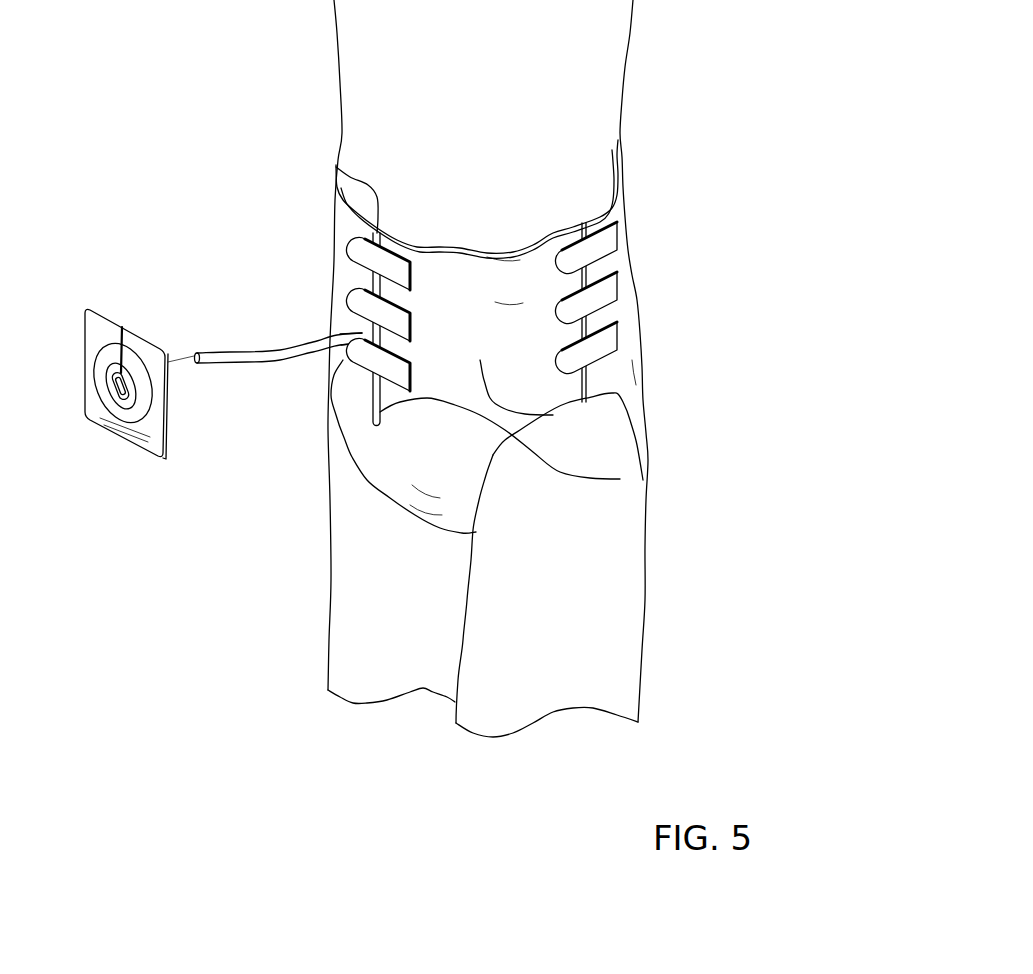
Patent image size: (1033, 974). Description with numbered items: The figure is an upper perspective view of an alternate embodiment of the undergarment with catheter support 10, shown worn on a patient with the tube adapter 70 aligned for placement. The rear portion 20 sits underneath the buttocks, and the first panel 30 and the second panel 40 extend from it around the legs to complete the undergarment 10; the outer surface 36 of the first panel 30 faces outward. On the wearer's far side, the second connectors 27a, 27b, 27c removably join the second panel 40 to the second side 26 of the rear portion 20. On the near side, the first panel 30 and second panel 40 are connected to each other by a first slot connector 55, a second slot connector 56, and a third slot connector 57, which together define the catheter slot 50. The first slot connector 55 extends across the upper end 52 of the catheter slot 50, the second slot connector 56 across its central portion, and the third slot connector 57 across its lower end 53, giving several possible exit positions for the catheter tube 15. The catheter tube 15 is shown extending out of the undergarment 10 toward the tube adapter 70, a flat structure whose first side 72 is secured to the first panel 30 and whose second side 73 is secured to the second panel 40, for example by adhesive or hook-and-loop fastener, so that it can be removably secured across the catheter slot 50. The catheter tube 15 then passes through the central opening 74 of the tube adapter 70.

The undergarment with catheter support 10 is at (377, 368).
The catheter tube 15 is at (250, 365).
The rear portion 20 is at (623, 180).
The second side of the rear portion 26 is at (590, 318).
The second connector 27a is at (597, 248).
The second connector 27b is at (600, 298).
The second connector 27c is at (597, 338).
The first panel 30 is at (340, 212).
The outer surface of the first panel 36 is at (345, 326).
The second panel 40 is at (553, 415).
The catheter slot 50 is at (372, 270).
The upper end of the catheter slot 52 is at (340, 165).
The lower end of the catheter slot 53 is at (620, 479).
The first slot connector 55 is at (352, 238).
The second slot connector 56 is at (352, 293).
The third slot connector 57 is at (338, 410).
The tube adapter 70 is at (144, 443).
The first side of the tube adapter 72 is at (85, 367).
The second side of the tube adapter 73 is at (170, 430).
The central opening 74 is at (112, 387).